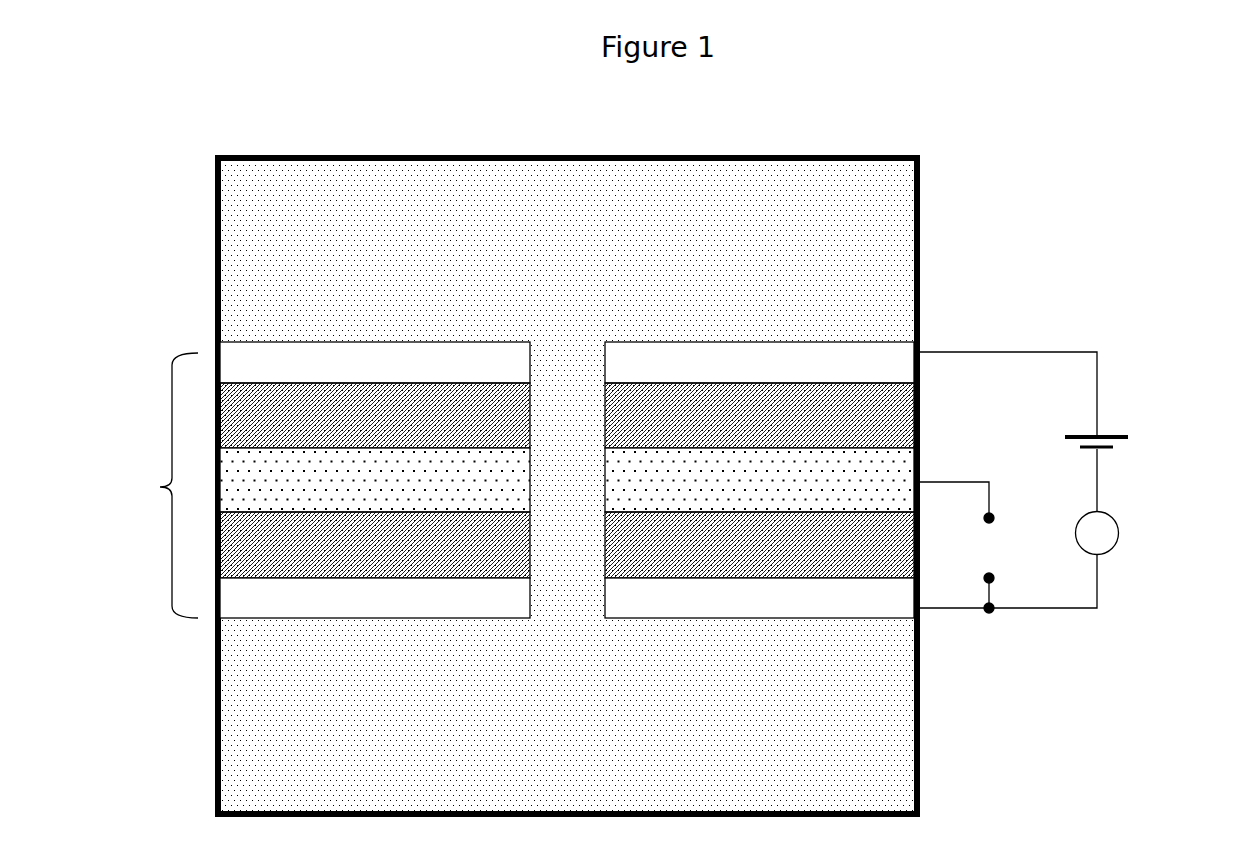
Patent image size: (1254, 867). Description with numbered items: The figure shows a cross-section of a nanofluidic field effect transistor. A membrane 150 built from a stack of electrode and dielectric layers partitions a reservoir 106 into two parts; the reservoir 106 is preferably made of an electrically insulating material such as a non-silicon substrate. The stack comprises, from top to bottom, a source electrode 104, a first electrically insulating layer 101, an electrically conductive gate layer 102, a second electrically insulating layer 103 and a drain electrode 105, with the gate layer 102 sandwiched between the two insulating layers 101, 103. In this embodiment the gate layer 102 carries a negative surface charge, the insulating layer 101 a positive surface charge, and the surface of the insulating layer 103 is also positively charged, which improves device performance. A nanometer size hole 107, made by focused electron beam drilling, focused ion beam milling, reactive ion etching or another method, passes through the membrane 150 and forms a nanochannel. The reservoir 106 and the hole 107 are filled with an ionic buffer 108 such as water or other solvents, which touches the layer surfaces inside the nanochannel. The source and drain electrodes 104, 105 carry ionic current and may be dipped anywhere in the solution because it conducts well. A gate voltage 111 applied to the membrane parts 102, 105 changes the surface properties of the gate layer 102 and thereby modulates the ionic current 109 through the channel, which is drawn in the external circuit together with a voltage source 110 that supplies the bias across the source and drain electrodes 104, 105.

The electrically insulating layer 101 is at (567, 415).
The gate layer 102 is at (567, 480).
The electrically insulating layer 103 is at (567, 545).
The source electrode 104 is at (567, 362).
The drain electrode 105 is at (567, 598).
The reservoir 106 is at (921, 771).
The nanometer size hole 107 is at (579, 341).
The ionic buffer 108 is at (567, 714).
The ionic current 109 is at (1131, 531).
The voltage source / battery 110 is at (1131, 426).
The gate voltage 111 is at (996, 502).
The membrane 150 is at (160, 487).